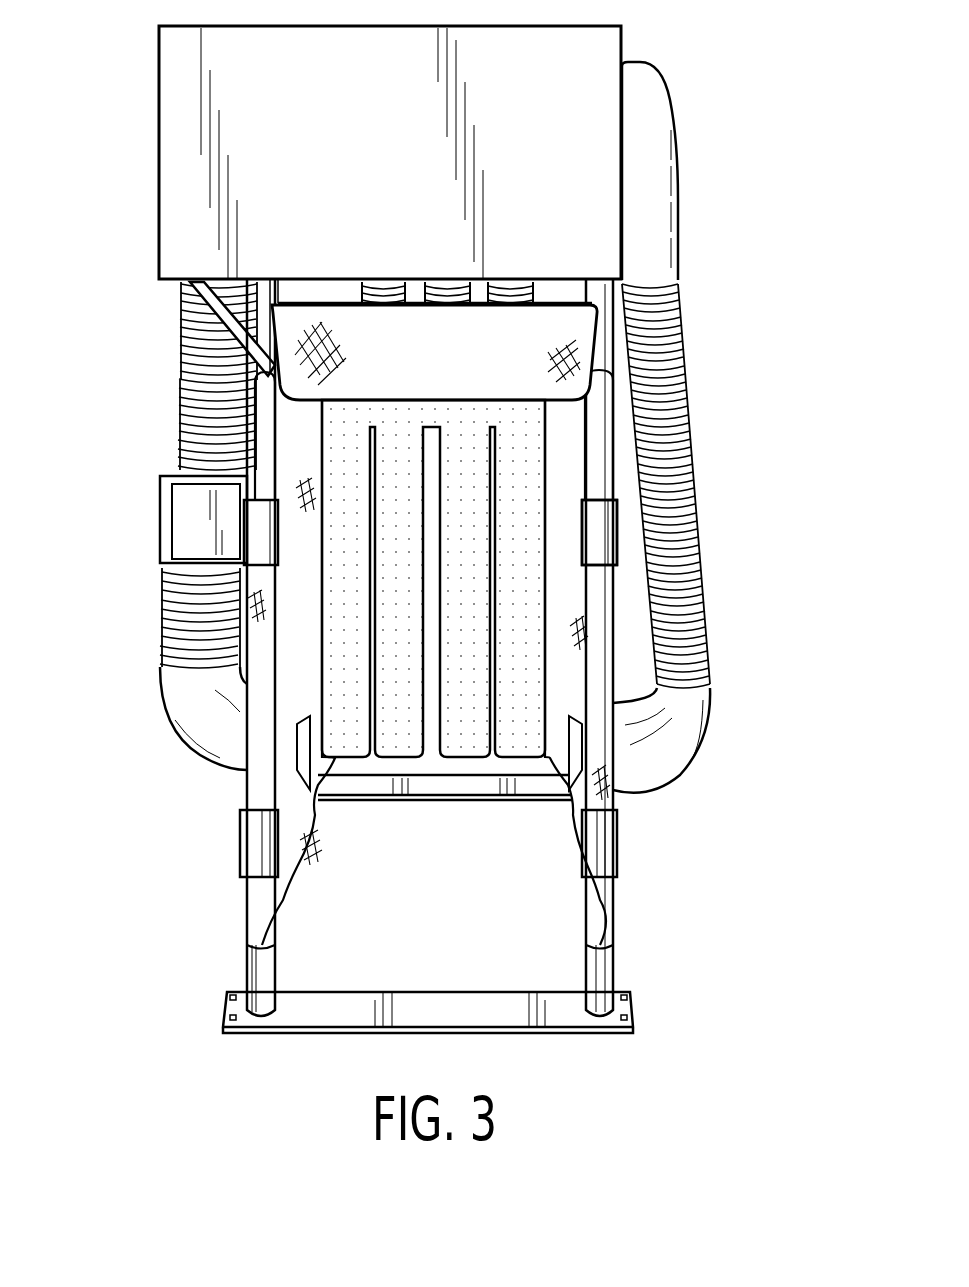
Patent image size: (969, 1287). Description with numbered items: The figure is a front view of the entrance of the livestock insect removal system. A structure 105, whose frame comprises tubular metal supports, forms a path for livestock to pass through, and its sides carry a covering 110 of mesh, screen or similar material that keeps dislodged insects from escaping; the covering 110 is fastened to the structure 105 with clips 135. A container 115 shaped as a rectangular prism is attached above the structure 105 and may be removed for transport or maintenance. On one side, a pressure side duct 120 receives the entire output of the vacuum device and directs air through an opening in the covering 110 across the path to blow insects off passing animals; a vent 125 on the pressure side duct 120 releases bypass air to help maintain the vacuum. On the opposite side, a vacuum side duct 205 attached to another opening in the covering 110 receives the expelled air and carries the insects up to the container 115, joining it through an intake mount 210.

The structure 105 is at (185, 352).
The covering 110 is at (292, 586).
The container 115 is at (170, 72).
The pressure side duct 120 is at (180, 430).
The vent 125 is at (190, 522).
The clips 135 is at (620, 540).
The vacuum side duct 205 is at (690, 432).
The intake mount 210 is at (668, 183).